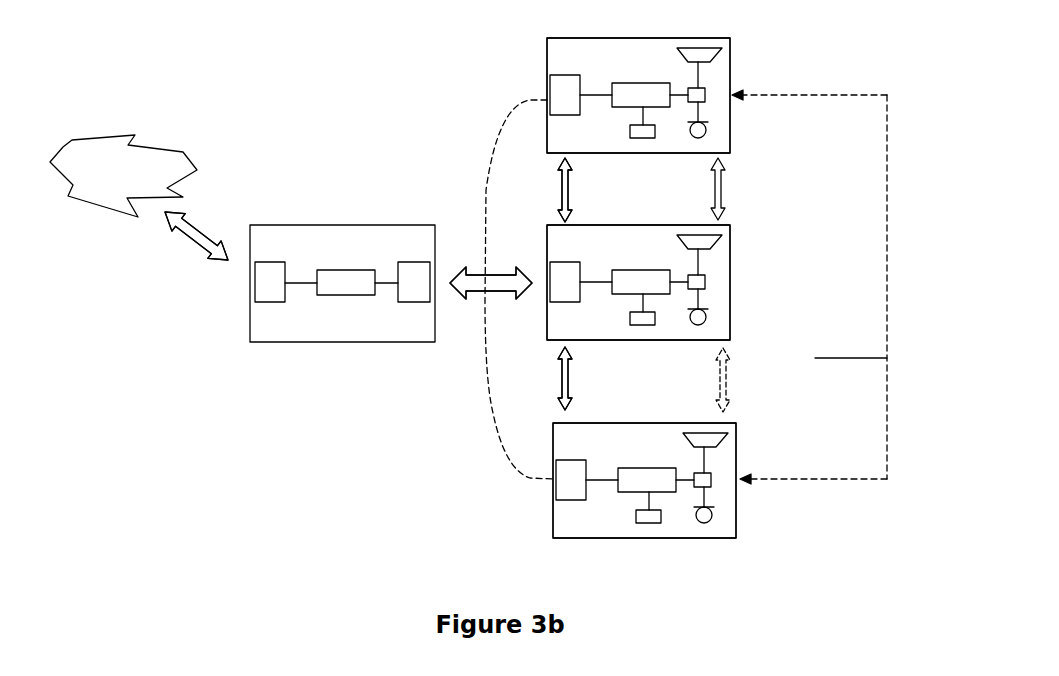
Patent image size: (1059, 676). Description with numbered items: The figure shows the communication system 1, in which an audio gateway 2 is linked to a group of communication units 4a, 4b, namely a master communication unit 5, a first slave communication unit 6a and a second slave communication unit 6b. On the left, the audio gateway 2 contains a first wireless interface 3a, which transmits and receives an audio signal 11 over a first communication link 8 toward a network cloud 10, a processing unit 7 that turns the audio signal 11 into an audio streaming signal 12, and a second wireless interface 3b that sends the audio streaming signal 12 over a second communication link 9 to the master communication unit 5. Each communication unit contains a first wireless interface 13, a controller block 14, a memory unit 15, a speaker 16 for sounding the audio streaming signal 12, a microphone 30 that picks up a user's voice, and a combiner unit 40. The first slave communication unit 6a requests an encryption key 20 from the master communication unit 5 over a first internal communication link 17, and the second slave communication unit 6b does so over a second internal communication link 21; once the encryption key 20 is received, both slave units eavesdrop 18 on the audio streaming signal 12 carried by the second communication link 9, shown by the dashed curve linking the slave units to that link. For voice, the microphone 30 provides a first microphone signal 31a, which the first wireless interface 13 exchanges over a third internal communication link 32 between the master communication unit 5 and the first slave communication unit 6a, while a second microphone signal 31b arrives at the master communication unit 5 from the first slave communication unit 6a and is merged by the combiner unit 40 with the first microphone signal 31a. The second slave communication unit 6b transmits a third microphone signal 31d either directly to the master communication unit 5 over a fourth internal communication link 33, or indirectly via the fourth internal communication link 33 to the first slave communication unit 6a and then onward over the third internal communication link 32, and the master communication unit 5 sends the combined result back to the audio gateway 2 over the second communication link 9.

The communication system 1 is at (333, 104).
The audio gateway 2 is at (312, 340).
The first wireless interface 3a is at (270, 302).
The second wireless interface 3b is at (415, 305).
The communication unit 4a is at (732, 260).
The communication unit 4b is at (732, 75).
The master communication unit 5 is at (732, 260).
The first slave communication unit 6a is at (732, 75).
The second slave communication unit 6b is at (738, 457).
The processing unit 7 is at (365, 300).
The first communication link 8 is at (193, 248).
The second communication link 9 is at (528, 298).
The network 10 is at (173, 142).
The audio signal 11 is at (193, 248).
The audio streaming signal 12 is at (528, 298).
The first wireless interface 13 is at (543, 87).
The controller 14 is at (670, 110).
The memory unit 15 is at (636, 138).
The speaker 16 is at (722, 50).
The first internal communication link 17 is at (557, 185).
The eavesdrop 18 is at (505, 120).
The encryption key 20 is at (557, 185).
The second internal communication link 21 is at (557, 375).
The microphone 30 is at (698, 140).
The first microphone signal 31a is at (698, 293).
The second microphone signal 31b is at (700, 112).
The third microphone signal 31d is at (707, 490).
The third internal communication link 32 is at (725, 197).
The fourth internal communication link 33 is at (815, 358).
The combiner unit 40 is at (689, 90).